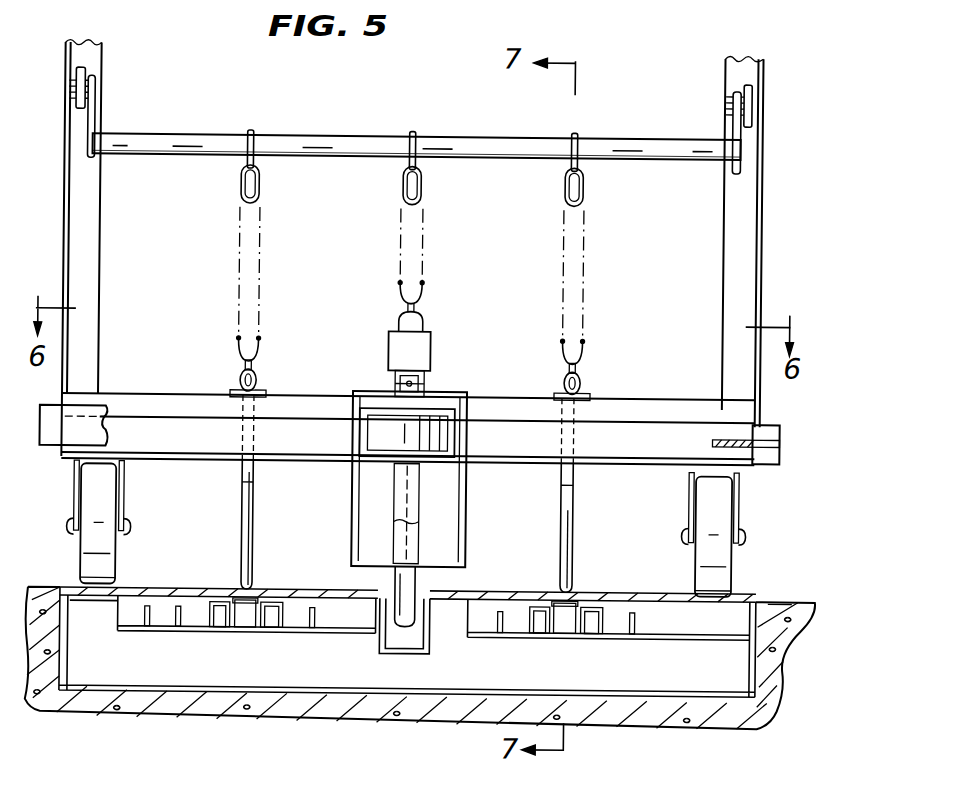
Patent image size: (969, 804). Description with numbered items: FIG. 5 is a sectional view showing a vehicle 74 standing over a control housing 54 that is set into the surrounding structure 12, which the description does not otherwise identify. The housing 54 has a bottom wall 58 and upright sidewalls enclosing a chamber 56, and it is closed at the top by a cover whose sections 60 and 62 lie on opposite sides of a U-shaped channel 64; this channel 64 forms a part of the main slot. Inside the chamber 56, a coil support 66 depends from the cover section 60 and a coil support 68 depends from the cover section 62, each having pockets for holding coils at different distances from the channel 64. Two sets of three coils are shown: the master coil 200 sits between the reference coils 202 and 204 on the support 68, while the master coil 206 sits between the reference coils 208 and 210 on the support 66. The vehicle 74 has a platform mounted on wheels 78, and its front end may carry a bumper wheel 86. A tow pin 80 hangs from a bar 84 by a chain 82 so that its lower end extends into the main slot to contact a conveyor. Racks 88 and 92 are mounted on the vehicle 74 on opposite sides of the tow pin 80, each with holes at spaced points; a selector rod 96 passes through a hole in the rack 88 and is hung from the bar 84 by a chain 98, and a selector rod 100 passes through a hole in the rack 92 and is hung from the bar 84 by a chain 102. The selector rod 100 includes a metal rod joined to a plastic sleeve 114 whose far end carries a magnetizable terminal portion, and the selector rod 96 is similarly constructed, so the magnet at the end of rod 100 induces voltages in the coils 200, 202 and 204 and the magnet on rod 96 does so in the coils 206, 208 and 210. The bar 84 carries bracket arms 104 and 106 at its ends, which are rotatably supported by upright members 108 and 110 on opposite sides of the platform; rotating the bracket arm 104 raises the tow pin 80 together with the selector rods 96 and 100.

The floor 12 is at (795, 598).
The control housing 54 is at (207, 690).
The chamber 56 is at (336, 678).
The bottom wall 58 is at (383, 692).
The cover section 60 is at (195, 589).
The cover section 62 is at (640, 597).
The U-shaped channel 64 is at (406, 650).
The coil support 66 is at (180, 628).
The coil support 68 is at (634, 634).
The vehicle 74 is at (444, 252).
The wheels 78 is at (103, 480).
The tow pin 80 is at (413, 582).
The chain 82 is at (422, 287).
The bar 84 is at (482, 150).
The bumper wheel 86 is at (380, 418).
The rack 88 is at (145, 393).
The rack 92 is at (640, 400).
The selector rod 96 is at (255, 488).
The chain 98 is at (262, 343).
The selector rod 100 is at (571, 508).
The chain 102 is at (560, 348).
The bracket arm 104 is at (93, 113).
The bracket arm 106 is at (735, 125).
The upright member 108 is at (90, 200).
The upright member 110 is at (722, 255).
The plastic sleeve 114 is at (571, 541).
The master coil 200 is at (566, 602).
The reference coil 202 is at (545, 612).
The reference coil 204 is at (597, 612).
The master coil 206 is at (252, 604).
The reference coil 208 is at (275, 608).
The reference coil 210 is at (222, 607).